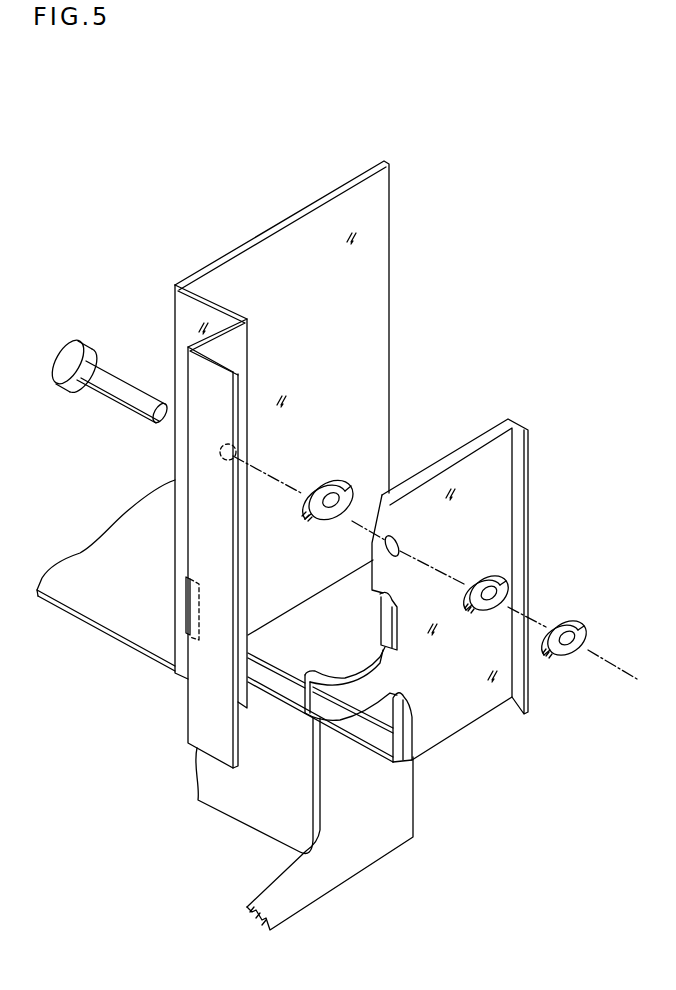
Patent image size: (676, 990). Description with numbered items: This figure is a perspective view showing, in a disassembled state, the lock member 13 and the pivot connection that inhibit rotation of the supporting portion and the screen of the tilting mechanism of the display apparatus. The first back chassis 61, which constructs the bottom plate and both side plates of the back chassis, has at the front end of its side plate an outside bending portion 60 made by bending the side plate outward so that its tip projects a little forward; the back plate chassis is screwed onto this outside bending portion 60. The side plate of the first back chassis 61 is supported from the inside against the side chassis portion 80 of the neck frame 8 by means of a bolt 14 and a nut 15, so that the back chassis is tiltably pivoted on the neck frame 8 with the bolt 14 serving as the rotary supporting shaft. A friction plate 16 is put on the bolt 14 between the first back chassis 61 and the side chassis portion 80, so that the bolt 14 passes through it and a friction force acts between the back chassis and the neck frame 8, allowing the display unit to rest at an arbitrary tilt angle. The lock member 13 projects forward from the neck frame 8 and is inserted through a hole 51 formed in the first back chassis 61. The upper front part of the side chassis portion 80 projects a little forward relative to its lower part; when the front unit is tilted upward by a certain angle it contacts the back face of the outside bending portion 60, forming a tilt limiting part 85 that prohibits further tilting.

The neck frame 8 is at (562, 503).
The lock member 13 is at (315, 705).
The bolt 14 is at (112, 377).
The nut 15 is at (505, 585).
The friction plate 16 is at (348, 492).
The hole 51 is at (187, 622).
The outside bending portion 60 is at (178, 447).
The first back chassis 61 is at (280, 242).
The side chassis portion 80 is at (495, 450).
The tilt limiting part 85 is at (388, 521).